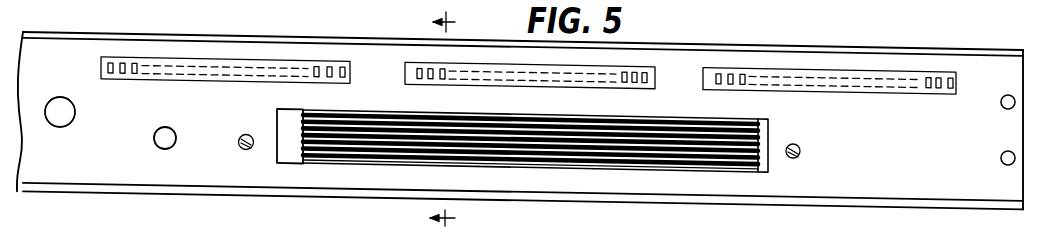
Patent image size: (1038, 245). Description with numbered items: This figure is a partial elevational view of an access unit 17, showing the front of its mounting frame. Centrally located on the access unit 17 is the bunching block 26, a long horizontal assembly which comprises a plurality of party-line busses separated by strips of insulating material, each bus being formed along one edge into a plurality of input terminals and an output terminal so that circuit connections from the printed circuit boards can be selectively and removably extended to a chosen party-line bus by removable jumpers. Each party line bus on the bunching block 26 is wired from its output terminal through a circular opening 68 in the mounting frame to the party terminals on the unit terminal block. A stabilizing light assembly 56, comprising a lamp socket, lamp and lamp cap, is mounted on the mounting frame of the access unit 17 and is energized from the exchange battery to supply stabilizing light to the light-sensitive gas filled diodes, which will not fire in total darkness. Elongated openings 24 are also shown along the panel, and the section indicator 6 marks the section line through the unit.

The section line 6- 6 is at (453, 121).
The access unit 17 is at (946, 50).
The connector slot 24 is at (100, 67).
The bunching block 26 is at (522, 130).
The stabilizing light assembly 56 is at (75, 112).
The circular opening 68 is at (154, 139).